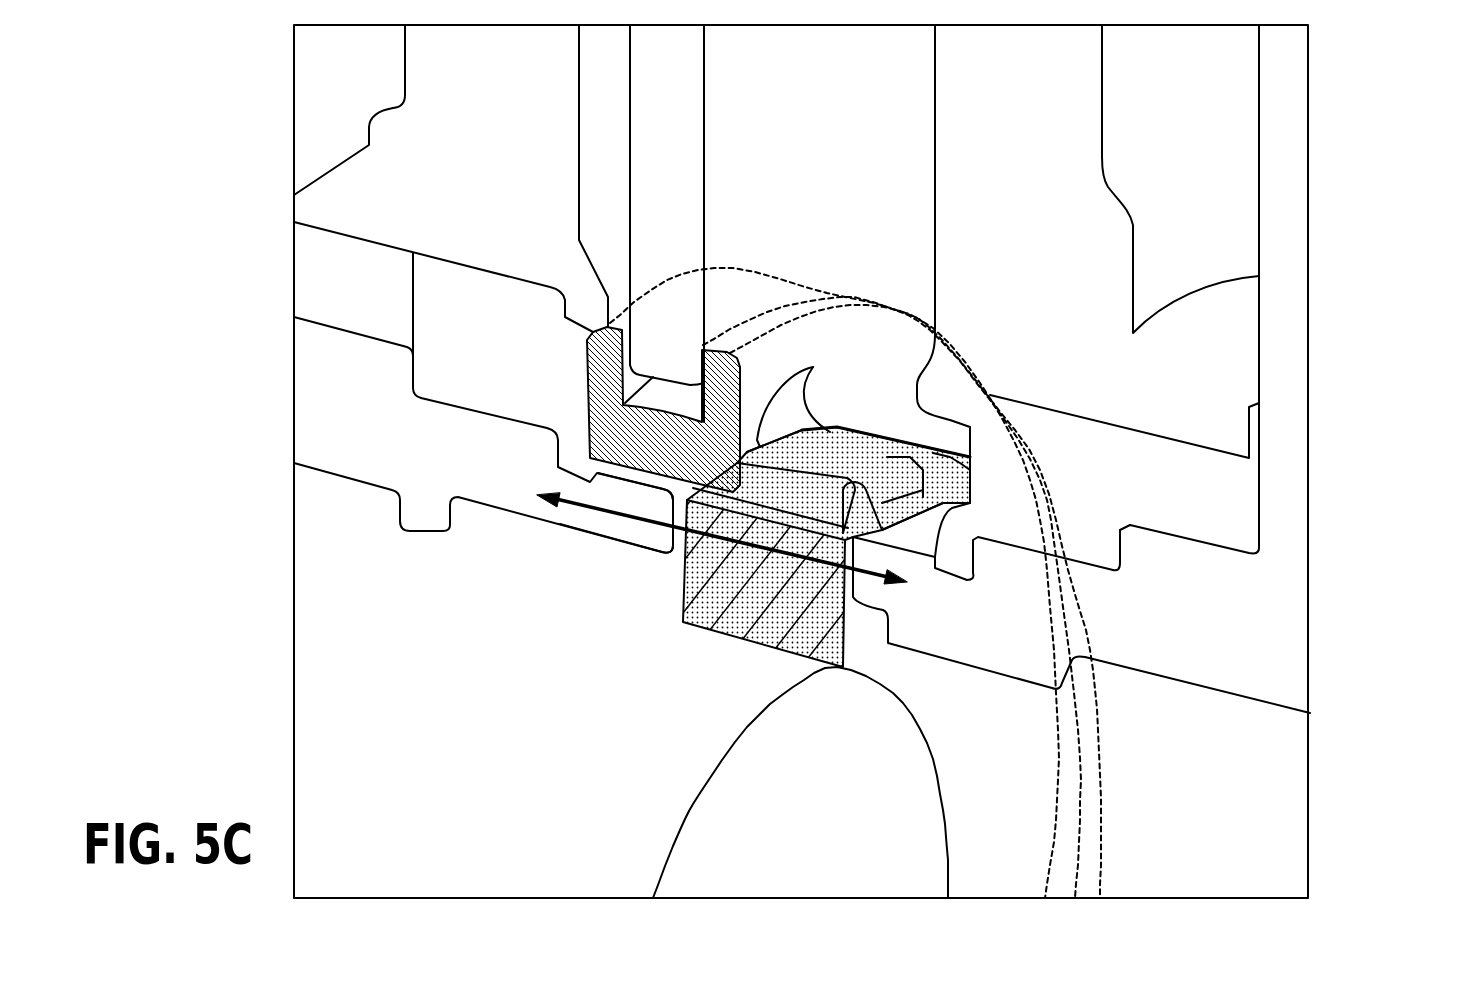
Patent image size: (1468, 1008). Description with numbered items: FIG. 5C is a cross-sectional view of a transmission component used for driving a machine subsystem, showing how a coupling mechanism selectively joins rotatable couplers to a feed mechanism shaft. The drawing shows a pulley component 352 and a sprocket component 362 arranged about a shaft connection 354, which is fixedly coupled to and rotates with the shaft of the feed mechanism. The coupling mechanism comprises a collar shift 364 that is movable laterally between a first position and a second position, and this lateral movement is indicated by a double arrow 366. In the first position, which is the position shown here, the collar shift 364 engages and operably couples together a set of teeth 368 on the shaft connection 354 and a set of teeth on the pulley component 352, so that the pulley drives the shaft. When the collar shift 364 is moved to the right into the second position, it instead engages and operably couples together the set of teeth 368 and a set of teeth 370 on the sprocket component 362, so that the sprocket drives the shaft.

The pulley component 352 is at (337, 395).
The shaft connection 354 is at (800, 621).
The sprocket component 362 is at (1245, 633).
The collar shift 364 is at (612, 425).
The double arrow 366 is at (617, 542).
The set of teeth 368 is at (797, 390).
The set of teeth 370 is at (945, 492).